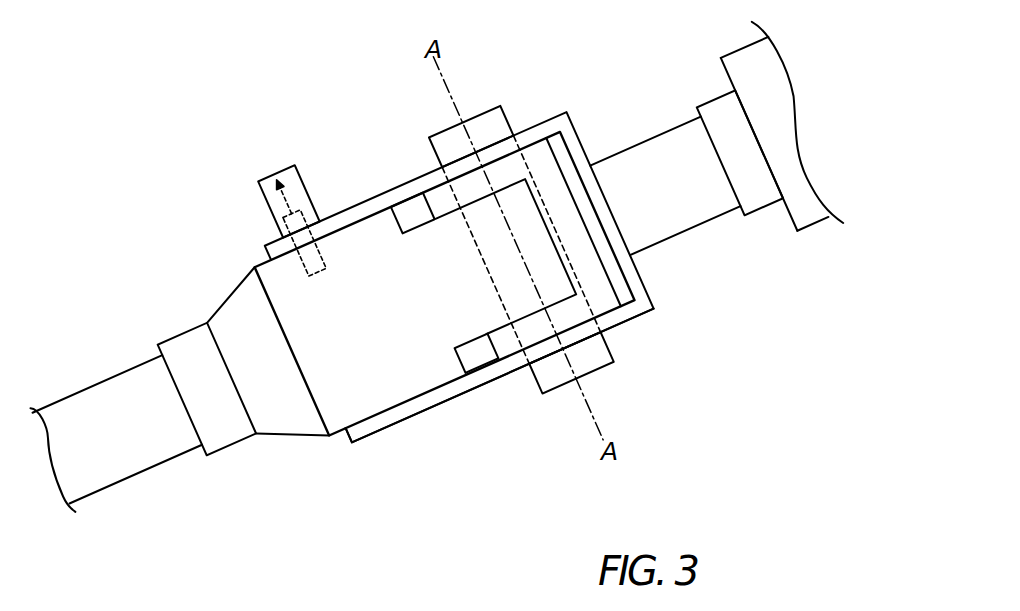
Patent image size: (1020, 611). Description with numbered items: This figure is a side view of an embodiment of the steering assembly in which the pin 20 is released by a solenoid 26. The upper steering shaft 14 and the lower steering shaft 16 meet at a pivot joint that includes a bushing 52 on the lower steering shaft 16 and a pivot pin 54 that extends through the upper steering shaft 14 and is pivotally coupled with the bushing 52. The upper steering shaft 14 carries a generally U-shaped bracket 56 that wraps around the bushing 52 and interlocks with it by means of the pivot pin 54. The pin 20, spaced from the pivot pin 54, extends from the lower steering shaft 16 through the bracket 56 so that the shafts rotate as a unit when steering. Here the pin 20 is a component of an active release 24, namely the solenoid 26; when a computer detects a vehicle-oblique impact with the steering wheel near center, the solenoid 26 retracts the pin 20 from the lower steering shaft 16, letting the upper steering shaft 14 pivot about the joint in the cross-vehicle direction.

The upper steering shaft 14 is at (673, 190).
The lower steering shaft 16 is at (118, 435).
The pin 20 is at (317, 274).
The active release 24 is at (237, 179).
The solenoid 26 is at (266, 178).
The bushing 52 is at (600, 297).
The pivot pin 54 is at (481, 108).
The bracket 56 is at (420, 403).